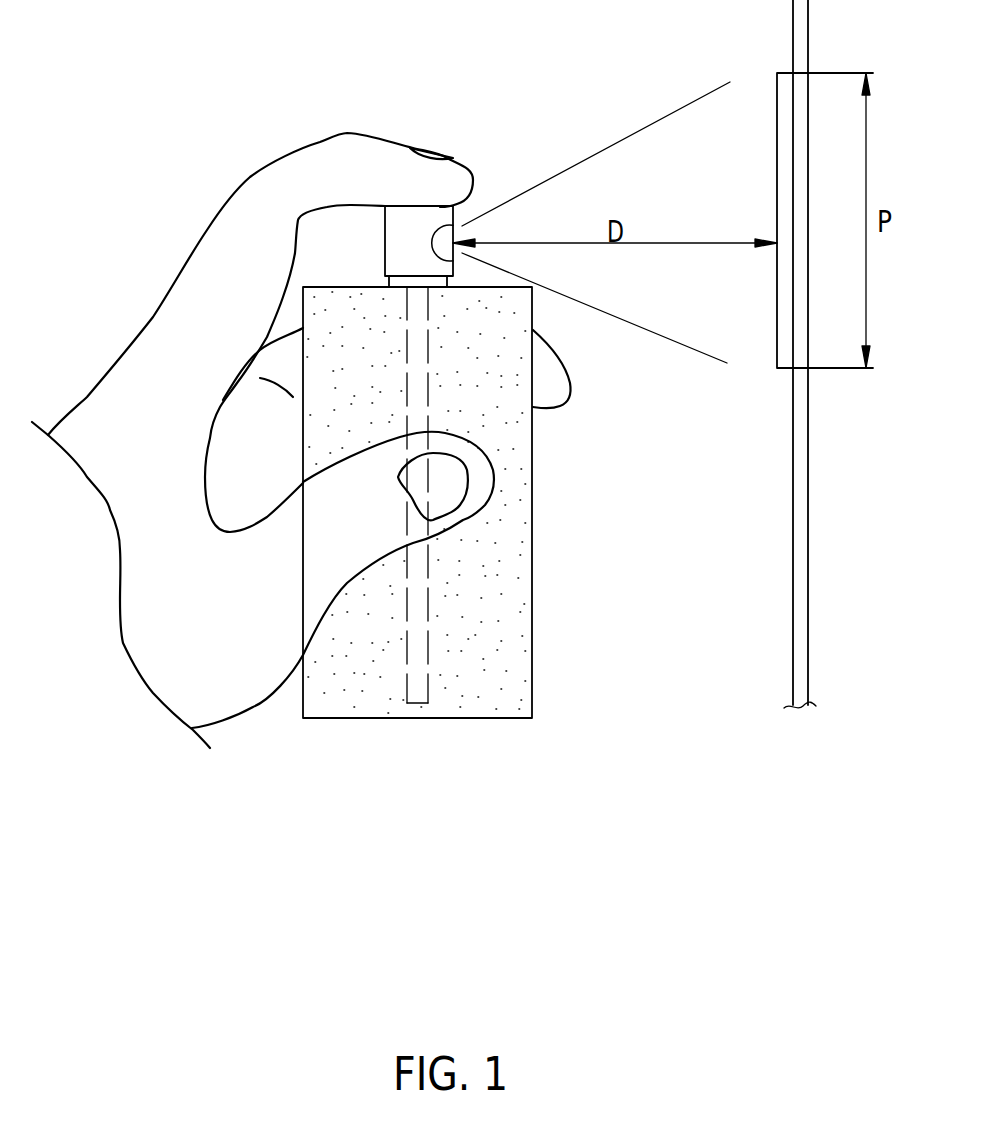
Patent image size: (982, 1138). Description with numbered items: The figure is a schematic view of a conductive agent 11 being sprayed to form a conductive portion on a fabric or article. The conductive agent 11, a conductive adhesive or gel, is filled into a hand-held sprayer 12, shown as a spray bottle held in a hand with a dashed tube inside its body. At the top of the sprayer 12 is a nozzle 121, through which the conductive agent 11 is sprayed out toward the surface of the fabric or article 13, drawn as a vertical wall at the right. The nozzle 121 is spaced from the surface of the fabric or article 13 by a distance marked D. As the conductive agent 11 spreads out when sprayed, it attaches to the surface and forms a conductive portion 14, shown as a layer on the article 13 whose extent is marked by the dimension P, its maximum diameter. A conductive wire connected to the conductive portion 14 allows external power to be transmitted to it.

The conductive agent 11 is at (507, 586).
The sprayer 12 is at (360, 720).
The nozzle 121 is at (445, 248).
The fabric or article 13 is at (802, 28).
The conductive portion 14 is at (785, 360).